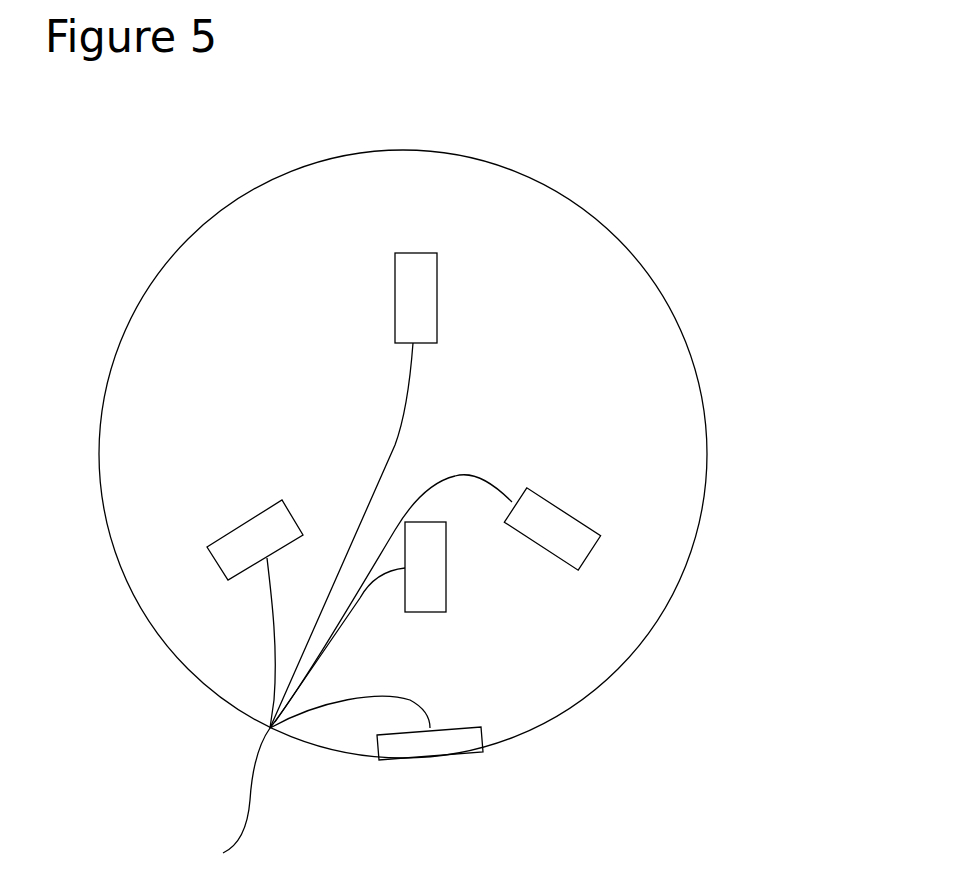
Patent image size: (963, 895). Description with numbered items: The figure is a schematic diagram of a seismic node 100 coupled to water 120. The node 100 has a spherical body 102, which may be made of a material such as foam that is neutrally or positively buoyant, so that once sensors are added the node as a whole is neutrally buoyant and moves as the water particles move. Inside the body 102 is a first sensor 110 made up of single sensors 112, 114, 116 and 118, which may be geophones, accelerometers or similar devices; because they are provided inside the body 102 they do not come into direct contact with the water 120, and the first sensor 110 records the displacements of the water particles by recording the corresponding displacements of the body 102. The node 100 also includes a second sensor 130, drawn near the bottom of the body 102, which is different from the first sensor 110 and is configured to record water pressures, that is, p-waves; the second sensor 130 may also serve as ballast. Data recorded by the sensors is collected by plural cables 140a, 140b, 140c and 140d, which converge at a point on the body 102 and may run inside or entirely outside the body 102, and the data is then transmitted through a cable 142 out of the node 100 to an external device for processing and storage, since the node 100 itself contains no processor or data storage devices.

The node 100 is at (434, 95).
The spherical body 102 is at (598, 258).
The first sensor 110 is at (813, 305).
The single sensor 112 is at (425, 277).
The single sensor 114 is at (243, 525).
The single sensor 116 is at (446, 568).
The single sensor 118 is at (558, 520).
The water 120 is at (74, 652).
The second sensor 130 is at (463, 757).
The cable 140a is at (272, 627).
The cable 140b is at (405, 420).
The cable 140c is at (457, 475).
The cable 140d is at (365, 592).
The cable 142 is at (247, 823).